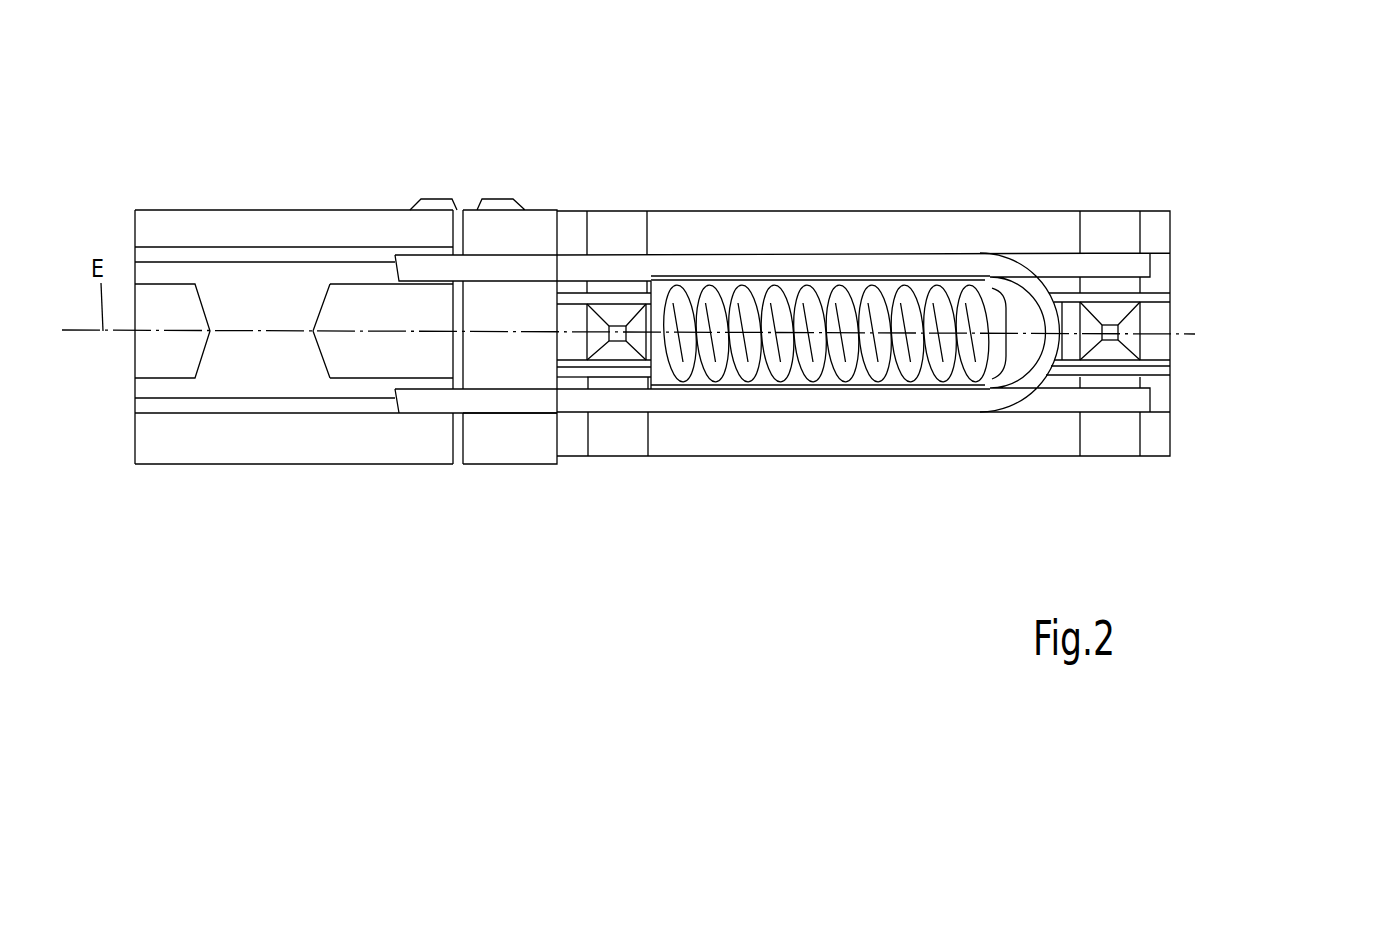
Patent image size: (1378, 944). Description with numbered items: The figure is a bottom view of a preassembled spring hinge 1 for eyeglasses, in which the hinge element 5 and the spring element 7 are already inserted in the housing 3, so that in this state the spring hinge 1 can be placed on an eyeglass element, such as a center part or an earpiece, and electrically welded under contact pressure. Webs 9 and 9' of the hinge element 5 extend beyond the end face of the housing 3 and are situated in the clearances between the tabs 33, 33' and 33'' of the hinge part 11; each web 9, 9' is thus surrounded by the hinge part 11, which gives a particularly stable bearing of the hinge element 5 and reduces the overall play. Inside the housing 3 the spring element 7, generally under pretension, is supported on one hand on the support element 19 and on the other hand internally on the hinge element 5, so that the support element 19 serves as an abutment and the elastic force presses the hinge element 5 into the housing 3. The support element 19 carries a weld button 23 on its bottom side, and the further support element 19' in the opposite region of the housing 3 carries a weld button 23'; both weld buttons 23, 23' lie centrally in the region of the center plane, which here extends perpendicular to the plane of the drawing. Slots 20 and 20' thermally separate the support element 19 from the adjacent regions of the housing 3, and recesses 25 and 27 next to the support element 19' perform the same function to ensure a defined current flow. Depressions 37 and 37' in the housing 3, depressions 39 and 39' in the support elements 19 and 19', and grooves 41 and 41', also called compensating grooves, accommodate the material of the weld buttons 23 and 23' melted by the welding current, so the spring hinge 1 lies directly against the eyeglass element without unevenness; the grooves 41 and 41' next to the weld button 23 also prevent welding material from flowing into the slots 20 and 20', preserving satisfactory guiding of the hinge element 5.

The spring hinge 1 is at (877, 143).
The housing 3 is at (990, 227).
The hinge element 5 is at (938, 398).
The spring element 7 is at (825, 367).
The web 9 is at (429, 194).
The web 9' is at (482, 460).
The hinge part 11 is at (253, 445).
The support element 19 is at (616, 447).
The support element 19' is at (1209, 331).
The slot 20 is at (604, 217).
The slot 20' is at (631, 449).
The weld button 23 is at (674, 453).
The weld button 23' is at (1224, 369).
The recess 25 is at (1118, 263).
The recess 27 is at (1112, 398).
The tab 33 is at (483, 249).
The tab 33' is at (429, 277).
The tab 33'' is at (510, 503).
The depression 37 is at (903, 316).
The depression 37' is at (643, 516).
The depression 39 is at (895, 348).
The depression 39' is at (604, 501).
The groove 41 is at (998, 293).
The groove 41' is at (552, 500).